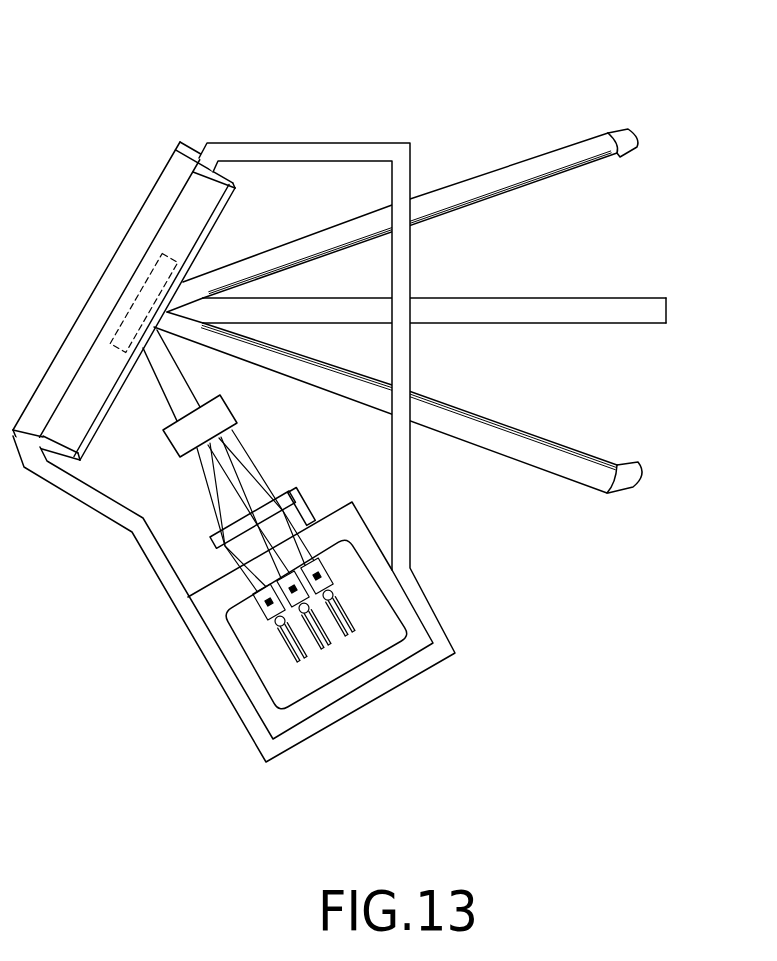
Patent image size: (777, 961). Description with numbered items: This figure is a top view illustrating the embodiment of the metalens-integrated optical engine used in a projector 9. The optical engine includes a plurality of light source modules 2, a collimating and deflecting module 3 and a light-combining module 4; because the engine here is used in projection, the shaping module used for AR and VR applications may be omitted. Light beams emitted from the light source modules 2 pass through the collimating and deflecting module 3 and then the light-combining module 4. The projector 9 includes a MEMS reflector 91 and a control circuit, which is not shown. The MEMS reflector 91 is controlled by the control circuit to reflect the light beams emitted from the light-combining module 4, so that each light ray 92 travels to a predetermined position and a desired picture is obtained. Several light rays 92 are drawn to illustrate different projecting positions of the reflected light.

The projector 9 is at (303, 122).
The MEMS reflector 91 is at (137, 302).
The light ray 92 is at (508, 166).
The light-combining module 4 is at (160, 452).
The collimating and deflecting module 3 is at (216, 554).
The light source module 2 is at (340, 577).